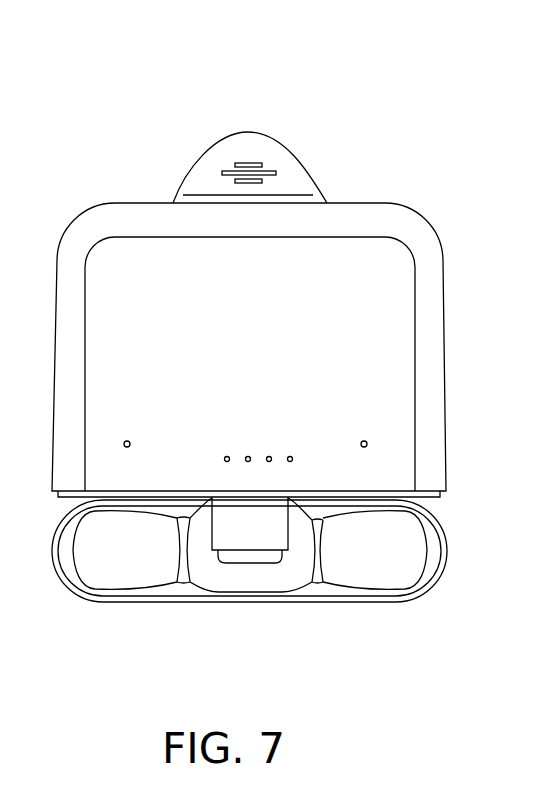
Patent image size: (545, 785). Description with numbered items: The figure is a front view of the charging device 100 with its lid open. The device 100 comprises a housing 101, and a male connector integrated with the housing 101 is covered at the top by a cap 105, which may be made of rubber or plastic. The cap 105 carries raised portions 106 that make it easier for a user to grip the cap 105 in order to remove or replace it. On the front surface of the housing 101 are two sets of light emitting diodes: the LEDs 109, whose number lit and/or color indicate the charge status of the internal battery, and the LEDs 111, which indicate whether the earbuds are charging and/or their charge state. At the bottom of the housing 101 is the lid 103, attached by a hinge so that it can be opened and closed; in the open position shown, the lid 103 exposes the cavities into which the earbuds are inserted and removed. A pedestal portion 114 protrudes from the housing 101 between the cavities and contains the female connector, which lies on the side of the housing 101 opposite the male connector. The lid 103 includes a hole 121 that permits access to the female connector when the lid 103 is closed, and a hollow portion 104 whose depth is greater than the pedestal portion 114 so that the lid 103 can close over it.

The device 100 is at (118, 98).
The housing 101 is at (445, 310).
The lid 103 is at (448, 542).
The hollow portion 104 is at (135, 577).
The cap 105 is at (303, 172).
The raised portions 106 is at (255, 162).
The light emitting diodes 109 is at (272, 456).
The light emitting diodes 111 is at (131, 440).
The pedestal portion 114 is at (287, 552).
The hole 121 is at (232, 564).